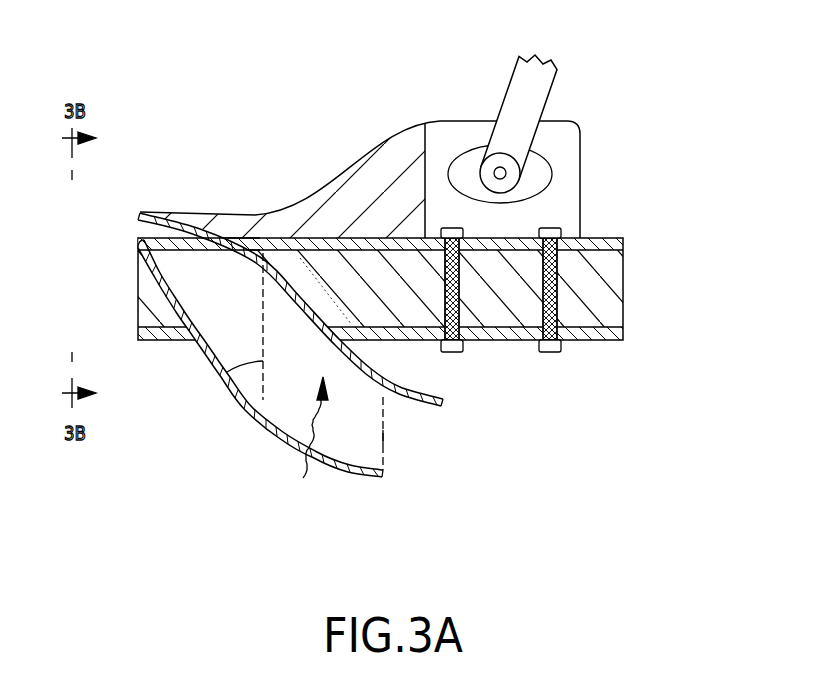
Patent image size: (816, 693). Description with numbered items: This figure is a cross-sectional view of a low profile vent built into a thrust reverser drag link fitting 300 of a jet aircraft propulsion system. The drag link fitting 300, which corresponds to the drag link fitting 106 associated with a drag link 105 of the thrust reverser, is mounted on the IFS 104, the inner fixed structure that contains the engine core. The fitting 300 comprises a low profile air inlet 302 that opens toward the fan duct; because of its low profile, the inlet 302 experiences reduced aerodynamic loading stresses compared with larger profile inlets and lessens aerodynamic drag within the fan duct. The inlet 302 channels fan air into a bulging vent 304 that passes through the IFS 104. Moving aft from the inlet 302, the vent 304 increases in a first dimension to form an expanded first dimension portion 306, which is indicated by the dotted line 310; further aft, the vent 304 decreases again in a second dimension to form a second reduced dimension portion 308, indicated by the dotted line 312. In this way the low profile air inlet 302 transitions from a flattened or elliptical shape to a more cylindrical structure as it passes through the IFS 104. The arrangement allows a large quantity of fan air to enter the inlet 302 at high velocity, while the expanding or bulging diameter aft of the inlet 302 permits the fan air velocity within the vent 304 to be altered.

The IFS 104 is at (614, 238).
The drag link 105 is at (555, 86).
The drag link fitting 106 is at (587, 123).
The drag link fitting 300 is at (441, 135).
The low profile air inlet 302 is at (147, 233).
The bulging vent 304 is at (301, 443).
The expanded first dimension portion 306 is at (251, 410).
The second reduced dimension portion 308 is at (381, 477).
The dotted line 310 is at (227, 372).
The dotted line 312 is at (388, 440).